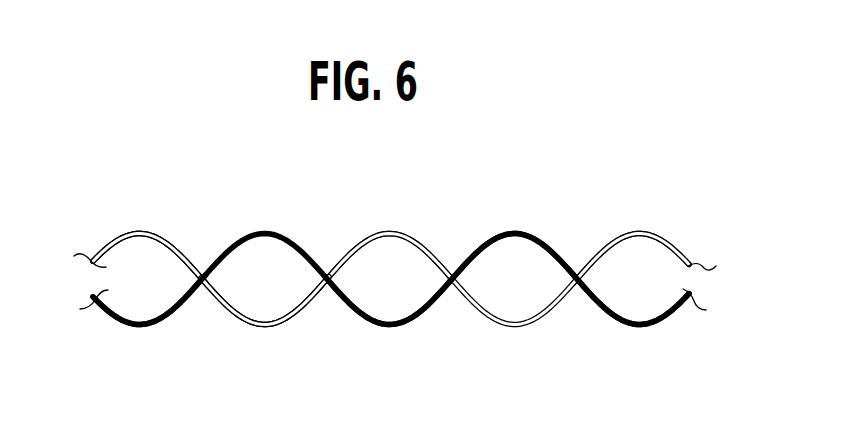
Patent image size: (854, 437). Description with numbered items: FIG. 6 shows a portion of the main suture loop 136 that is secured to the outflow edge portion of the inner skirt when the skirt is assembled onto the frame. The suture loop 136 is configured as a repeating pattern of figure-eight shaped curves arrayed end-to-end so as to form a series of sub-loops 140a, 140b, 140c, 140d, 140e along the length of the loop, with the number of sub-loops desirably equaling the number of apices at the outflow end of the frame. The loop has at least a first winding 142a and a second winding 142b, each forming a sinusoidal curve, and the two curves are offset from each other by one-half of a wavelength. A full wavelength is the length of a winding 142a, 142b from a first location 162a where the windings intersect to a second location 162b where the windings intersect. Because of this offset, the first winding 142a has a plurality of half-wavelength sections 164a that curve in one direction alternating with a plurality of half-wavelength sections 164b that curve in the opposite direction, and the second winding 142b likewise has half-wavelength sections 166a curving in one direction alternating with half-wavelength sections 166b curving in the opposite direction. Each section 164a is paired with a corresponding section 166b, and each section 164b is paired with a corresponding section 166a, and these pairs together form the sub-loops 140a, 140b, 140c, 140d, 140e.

The main suture loop 136 is at (519, 194).
The sub-loop 140a is at (120, 233).
The sub-loop 140b is at (303, 237).
The sub-loop 140c is at (418, 237).
The sub-loop 140d is at (547, 237).
The sub-loop 140e is at (667, 236).
The first winding 142a is at (168, 233).
The second winding 142b is at (148, 330).
The first location 162a is at (205, 280).
The second location 162b is at (455, 277).
The half-wavelength section 164a is at (140, 230).
The half-wavelength section 164b is at (265, 325).
The half-wavelength section 166a is at (260, 232).
The half-wavelength section 166b is at (393, 325).